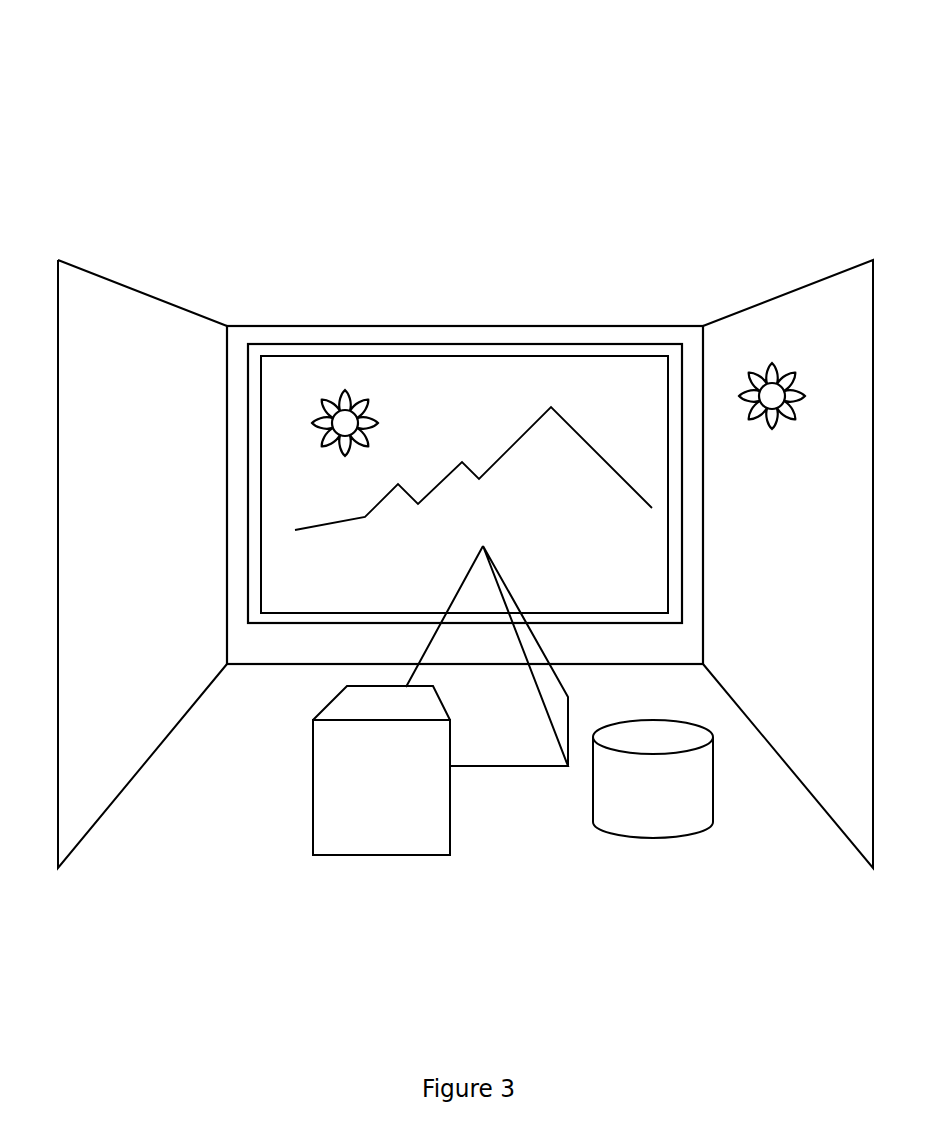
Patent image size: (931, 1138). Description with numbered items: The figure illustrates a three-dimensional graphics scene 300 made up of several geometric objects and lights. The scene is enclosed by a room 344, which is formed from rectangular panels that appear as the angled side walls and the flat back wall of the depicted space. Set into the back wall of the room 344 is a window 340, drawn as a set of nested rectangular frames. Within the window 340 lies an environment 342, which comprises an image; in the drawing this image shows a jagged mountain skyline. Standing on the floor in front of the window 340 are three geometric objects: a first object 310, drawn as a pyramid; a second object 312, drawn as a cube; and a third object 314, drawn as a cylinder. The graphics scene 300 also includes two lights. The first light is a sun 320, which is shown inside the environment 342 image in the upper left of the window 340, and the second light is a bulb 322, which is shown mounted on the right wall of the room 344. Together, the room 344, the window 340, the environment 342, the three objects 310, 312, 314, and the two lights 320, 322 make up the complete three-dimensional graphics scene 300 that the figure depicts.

The three-dimensional graphics scene 300 is at (753, 107).
The object 1 310 is at (517, 767).
The object 2 312 is at (340, 855).
The object 3 314 is at (673, 840).
The sun 320 is at (323, 400).
The bulb 322 is at (765, 365).
The window 340 is at (427, 344).
The environment 342 is at (600, 357).
The room 344 is at (123, 285).